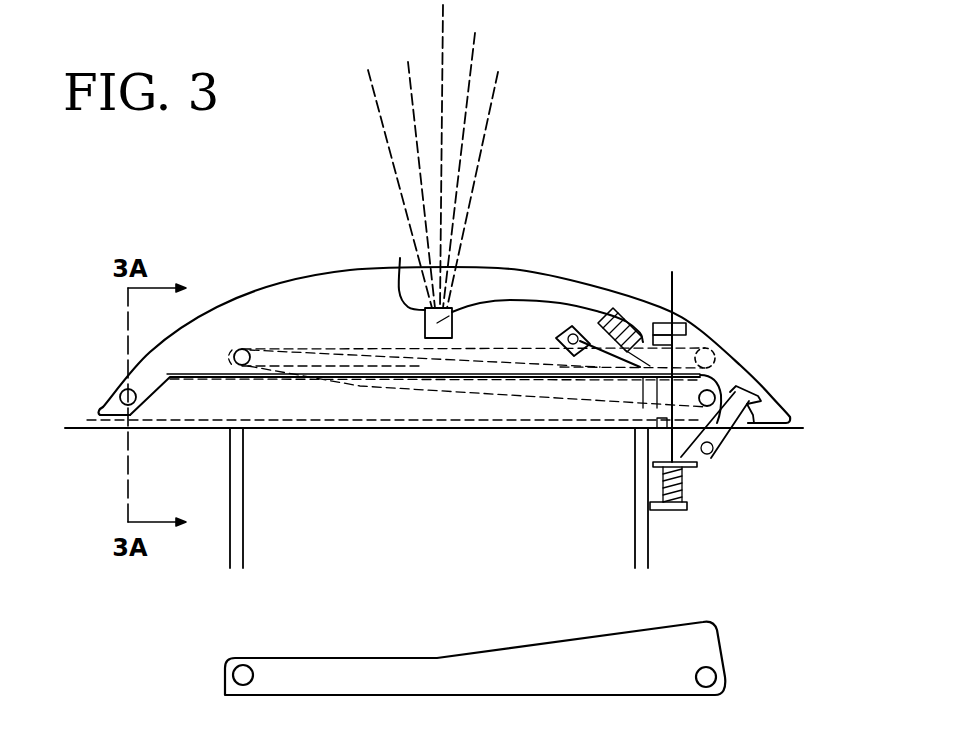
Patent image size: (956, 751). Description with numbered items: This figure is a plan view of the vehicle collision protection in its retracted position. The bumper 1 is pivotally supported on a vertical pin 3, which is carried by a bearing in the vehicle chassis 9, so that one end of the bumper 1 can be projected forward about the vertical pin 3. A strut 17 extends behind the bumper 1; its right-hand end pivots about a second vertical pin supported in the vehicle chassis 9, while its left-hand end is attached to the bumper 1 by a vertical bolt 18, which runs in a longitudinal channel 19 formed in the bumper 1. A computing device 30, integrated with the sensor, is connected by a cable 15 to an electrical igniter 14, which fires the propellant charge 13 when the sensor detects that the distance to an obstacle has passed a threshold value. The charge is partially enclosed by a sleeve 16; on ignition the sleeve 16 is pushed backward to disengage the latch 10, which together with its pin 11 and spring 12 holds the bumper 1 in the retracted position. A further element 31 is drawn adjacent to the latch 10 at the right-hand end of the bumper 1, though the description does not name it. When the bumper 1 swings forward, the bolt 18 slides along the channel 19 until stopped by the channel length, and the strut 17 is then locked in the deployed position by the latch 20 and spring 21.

The bumper 1 is at (292, 295).
The vertical pin 3 is at (120, 397).
The vehicle chassis 9 is at (232, 508).
The latch 10 is at (723, 432).
The pin 11 is at (725, 453).
The spring 12 is at (683, 485).
The propellant charge 13 is at (683, 360).
The electrical igniter 14 is at (682, 325).
The cable 15 is at (522, 300).
The sleeve 16 is at (657, 440).
The strut 17 is at (552, 652).
The vertical bolt 18 is at (245, 356).
The longitudinal channel 19 is at (537, 358).
The latch 20 is at (588, 337).
The spring 21 is at (620, 318).
The computing device 30 is at (400, 258).
The pawl 31 is at (716, 390).